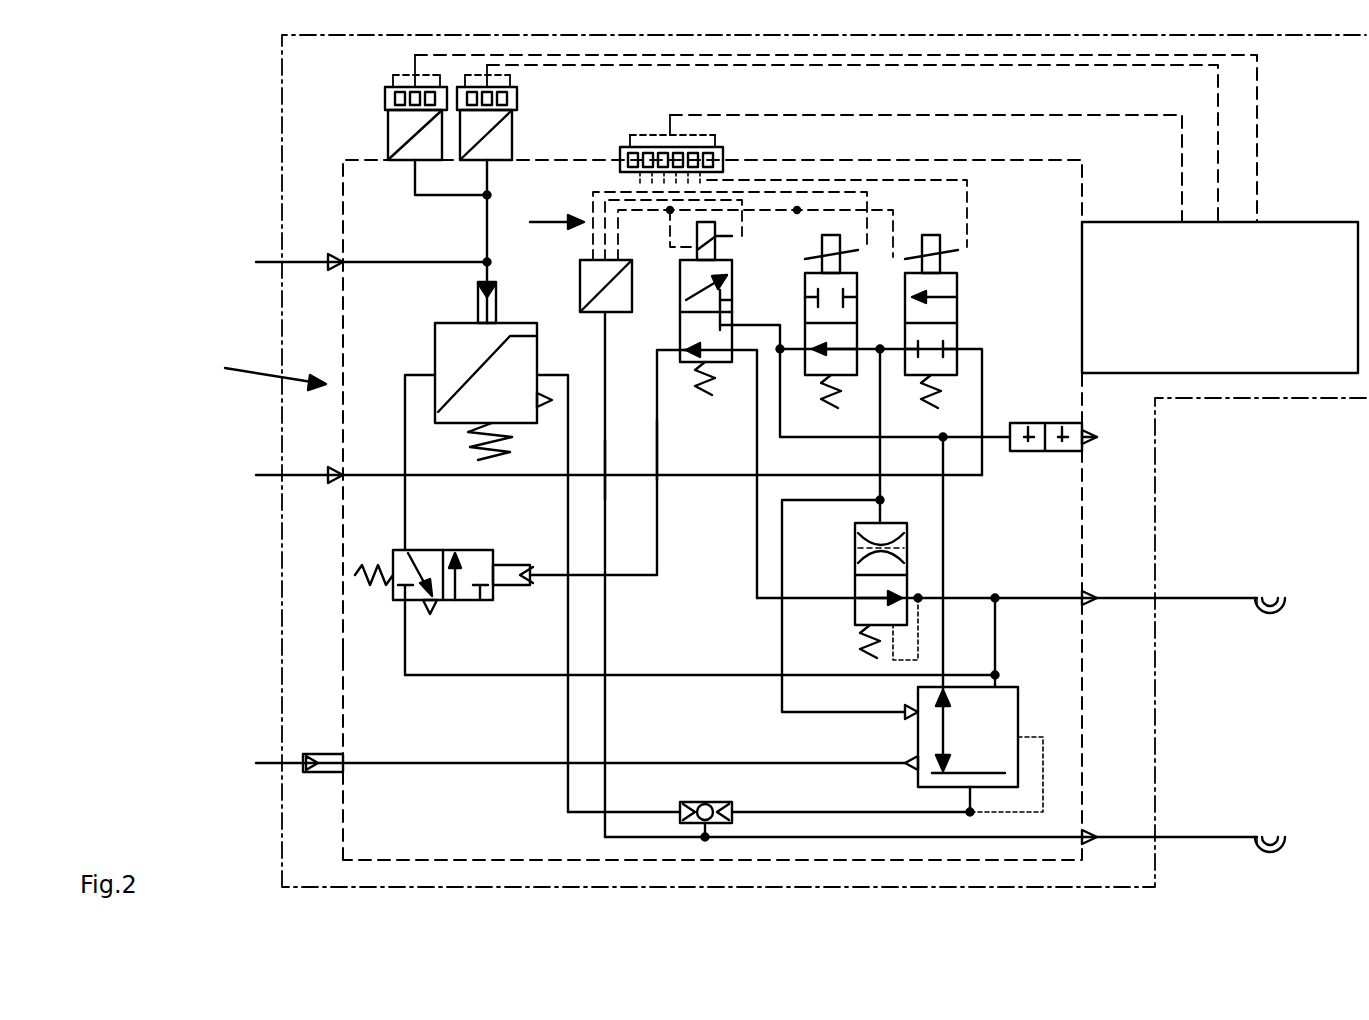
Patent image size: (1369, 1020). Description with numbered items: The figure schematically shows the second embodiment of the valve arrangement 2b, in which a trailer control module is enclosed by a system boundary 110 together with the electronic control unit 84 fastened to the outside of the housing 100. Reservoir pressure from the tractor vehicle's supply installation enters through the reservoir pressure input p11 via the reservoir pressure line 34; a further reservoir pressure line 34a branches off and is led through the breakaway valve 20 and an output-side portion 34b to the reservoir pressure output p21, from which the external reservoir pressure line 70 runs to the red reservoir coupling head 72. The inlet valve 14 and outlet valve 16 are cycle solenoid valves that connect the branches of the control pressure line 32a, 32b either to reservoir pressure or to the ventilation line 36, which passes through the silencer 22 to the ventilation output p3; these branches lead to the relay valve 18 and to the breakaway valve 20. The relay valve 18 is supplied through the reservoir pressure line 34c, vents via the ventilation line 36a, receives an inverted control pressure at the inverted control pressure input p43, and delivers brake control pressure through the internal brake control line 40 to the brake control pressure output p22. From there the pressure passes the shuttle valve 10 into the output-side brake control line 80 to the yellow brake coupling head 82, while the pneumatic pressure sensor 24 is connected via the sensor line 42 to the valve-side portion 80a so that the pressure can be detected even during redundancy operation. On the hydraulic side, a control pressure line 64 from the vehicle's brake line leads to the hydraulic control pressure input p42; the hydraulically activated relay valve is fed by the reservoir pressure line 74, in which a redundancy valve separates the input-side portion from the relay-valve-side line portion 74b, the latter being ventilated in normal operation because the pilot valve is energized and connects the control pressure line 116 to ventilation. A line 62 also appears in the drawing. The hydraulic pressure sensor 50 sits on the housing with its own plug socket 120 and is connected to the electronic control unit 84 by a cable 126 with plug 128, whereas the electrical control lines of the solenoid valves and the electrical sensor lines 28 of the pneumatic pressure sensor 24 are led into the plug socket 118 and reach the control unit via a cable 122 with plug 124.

The valve arrangement 2b is at (200, 89).
The shuttle valve 10 is at (690, 803).
The inlet valve 14 is at (962, 322).
The outlet valve 16 is at (805, 298).
The relay valve 18 is at (918, 752).
The breakaway valve 20 is at (855, 568).
The silencer 22 is at (1053, 423).
The pneumatic pressure sensor 24 is at (578, 290).
The electrical sensor lines 28 is at (539, 227).
The control pressure line 32a is at (883, 425).
The control pressure line 32b is at (782, 635).
The reservoir pressure line 34 is at (637, 470).
The further reservoir pressure line 34a is at (757, 537).
The output-side portion of the reservoir pressure line 34b is at (1040, 596).
The reservoir pressure line 34c is at (995, 640).
The ventilation line 36 is at (850, 440).
The ventilation line 36a is at (945, 512).
The internal brake control line 40 is at (800, 810).
The sensor line 42 is at (608, 607).
The hydraulic pressure sensor 50 is at (514, 131).
The pneumatic line 62 is at (568, 637).
The control pressure line 64 is at (388, 255).
The external reservoir pressure line 70 is at (1208, 596).
The coupling head reservoir 72 is at (1270, 615).
The reservoir pressure line 74 is at (495, 677).
The relay-valve-side line portion 74b is at (405, 520).
The output-side brake control line 80 is at (1208, 835).
The valve-side line portion of the brake control line 80a is at (862, 835).
The coupling head brake 82 is at (1270, 852).
The electronic control unit 84 is at (1235, 375).
The housing 100 is at (343, 647).
The system boundary 110 is at (282, 565).
The control pressure line 116 is at (660, 450).
The plug socket 118 is at (620, 158).
The plug socket 120 is at (517, 105).
The cable 122 is at (1182, 168).
The plug 124 is at (715, 148).
The cable 126 is at (1218, 157).
The plug 128 is at (500, 78).
The ventilation output p3 is at (1086, 440).
The reservoir pressure input p11 is at (330, 471).
The reservoir pressure output p21 is at (1100, 596).
The brake control pressure output p22 is at (1105, 835).
The hydraulic control pressure input p42 is at (330, 258).
The inverted control pressure input p43 is at (310, 752).